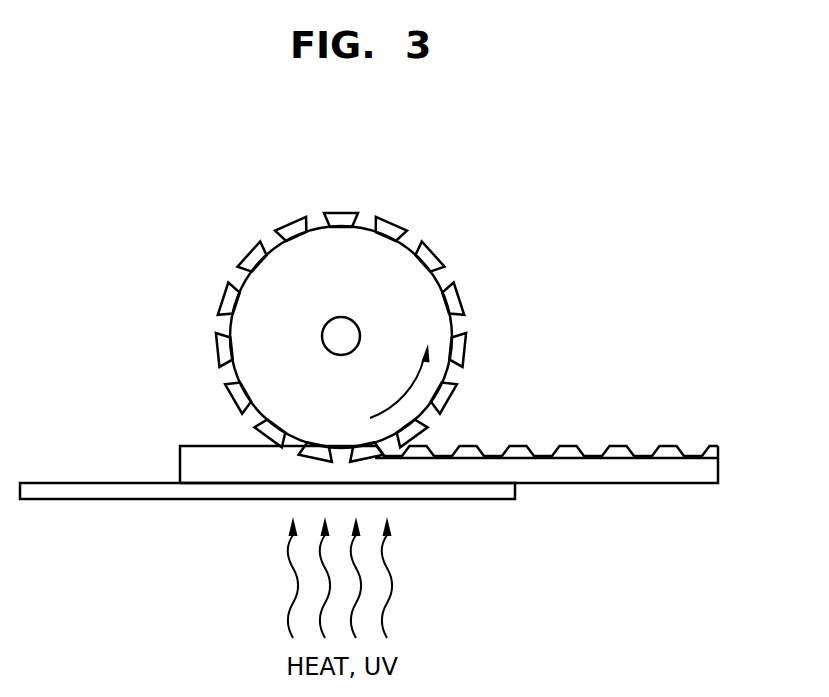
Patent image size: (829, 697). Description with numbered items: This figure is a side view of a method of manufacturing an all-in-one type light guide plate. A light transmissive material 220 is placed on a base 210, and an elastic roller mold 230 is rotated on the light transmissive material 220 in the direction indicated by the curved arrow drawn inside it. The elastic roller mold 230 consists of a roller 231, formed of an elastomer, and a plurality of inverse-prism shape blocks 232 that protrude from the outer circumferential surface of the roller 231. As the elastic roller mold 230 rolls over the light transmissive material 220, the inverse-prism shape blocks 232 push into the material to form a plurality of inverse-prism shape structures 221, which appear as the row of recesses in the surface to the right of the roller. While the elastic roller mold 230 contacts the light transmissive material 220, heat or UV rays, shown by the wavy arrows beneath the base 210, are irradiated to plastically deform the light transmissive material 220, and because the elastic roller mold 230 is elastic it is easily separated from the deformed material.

The base 210 is at (515, 494).
The light transmissive material 220 is at (473, 460).
The inverse-prism shape structures 221 is at (597, 445).
The elastic roller mold 230 is at (322, 309).
The roller 231 is at (363, 240).
The inverse-prism shape blocks 232 is at (418, 430).